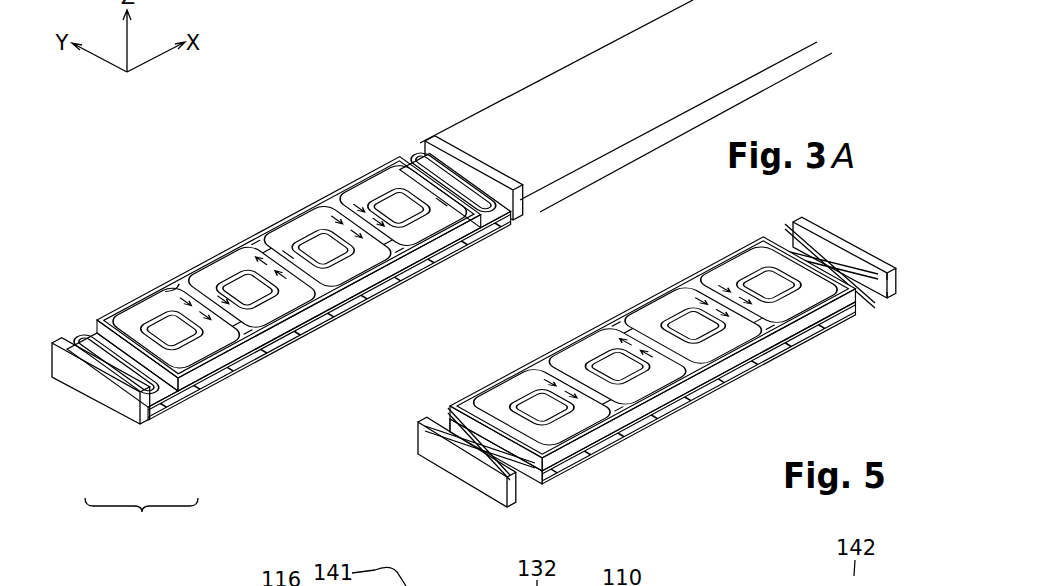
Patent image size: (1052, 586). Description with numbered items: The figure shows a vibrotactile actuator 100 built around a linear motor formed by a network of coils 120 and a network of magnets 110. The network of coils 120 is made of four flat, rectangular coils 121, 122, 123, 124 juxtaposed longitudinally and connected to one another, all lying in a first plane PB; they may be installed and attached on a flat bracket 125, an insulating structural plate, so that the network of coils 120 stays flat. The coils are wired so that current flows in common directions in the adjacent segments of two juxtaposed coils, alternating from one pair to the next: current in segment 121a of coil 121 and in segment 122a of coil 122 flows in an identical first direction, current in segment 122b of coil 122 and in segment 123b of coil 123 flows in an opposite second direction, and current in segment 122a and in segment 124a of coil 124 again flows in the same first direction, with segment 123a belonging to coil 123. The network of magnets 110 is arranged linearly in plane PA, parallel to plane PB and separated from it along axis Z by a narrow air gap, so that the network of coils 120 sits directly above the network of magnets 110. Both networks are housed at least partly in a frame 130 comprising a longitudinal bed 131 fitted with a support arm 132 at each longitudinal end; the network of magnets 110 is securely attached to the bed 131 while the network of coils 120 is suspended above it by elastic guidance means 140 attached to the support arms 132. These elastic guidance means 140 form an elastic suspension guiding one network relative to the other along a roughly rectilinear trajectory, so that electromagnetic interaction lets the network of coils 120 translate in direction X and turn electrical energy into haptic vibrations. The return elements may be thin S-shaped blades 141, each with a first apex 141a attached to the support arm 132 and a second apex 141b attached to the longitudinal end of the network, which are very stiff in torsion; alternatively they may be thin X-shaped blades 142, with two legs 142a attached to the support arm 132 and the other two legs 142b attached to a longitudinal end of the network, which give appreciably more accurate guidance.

In FIG. 5, the vibrotactile actuator 100 is at (864, 410).
In FIG. 3A, the network of magnets 110 is at (227, 372).
In FIG. 5, the network of magnets 110 is at (670, 420).
In FIG. 3A, the network of coils 120 is at (213, 236).
In FIG. 5, the network of coils 120 is at (542, 349).
In FIG. 3A, the first coil 121 is at (162, 287).
In FIG. 3A, the first segment of coil 121 121a is at (173, 287).
In FIG. 3A, the second coil 122 is at (232, 252).
In FIG. 3A, the second segment of coil 122 122a is at (226, 298).
In FIG. 3A, the segment of coil 122 122b is at (270, 268).
In FIG. 3A, the third coil 123 is at (307, 212).
In FIG. 3A, the segment of coil 123 123a is at (346, 230).
In FIG. 3A, the segment of coil 123 123b is at (292, 245).
In FIG. 3A, the fourth coil 124 is at (374, 180).
In FIG. 3A, the segment of coil 124 124a is at (413, 215).
In FIG. 3A, the flat bracket 125 is at (98, 322).
In FIG. 5, the flat bracket 125 is at (758, 344).
In FIG. 3A, the frame 130 is at (141, 519).
In FIG. 3A, the longitudinal bed 131 is at (168, 412).
In FIG. 5, the longitudinal bed 131 is at (546, 484).
In FIG. 3A, the support arm 132 is at (133, 422).
In FIG. 5, the support arm 132 is at (427, 443).
In FIG. 3A, the elastic guidance means 140 is at (488, 188).
In FIG. 3A, the thin S-shaped blade 141 is at (80, 338).
In FIG. 3A, the first apex 141a is at (96, 378).
In FIG. 3A, the second apex 141b is at (86, 334).
In FIG. 5, the thin X-shaped blade 142 is at (458, 458).
In FIG. 5, the two legs of the X 142a is at (885, 270).
In FIG. 5, the other two legs of the X 142b is at (884, 298).
In FIG. 3A, the plane of the network of magnets PA is at (795, 80).
In FIG. 3A, the plane of the network of coils PB is at (772, 66).